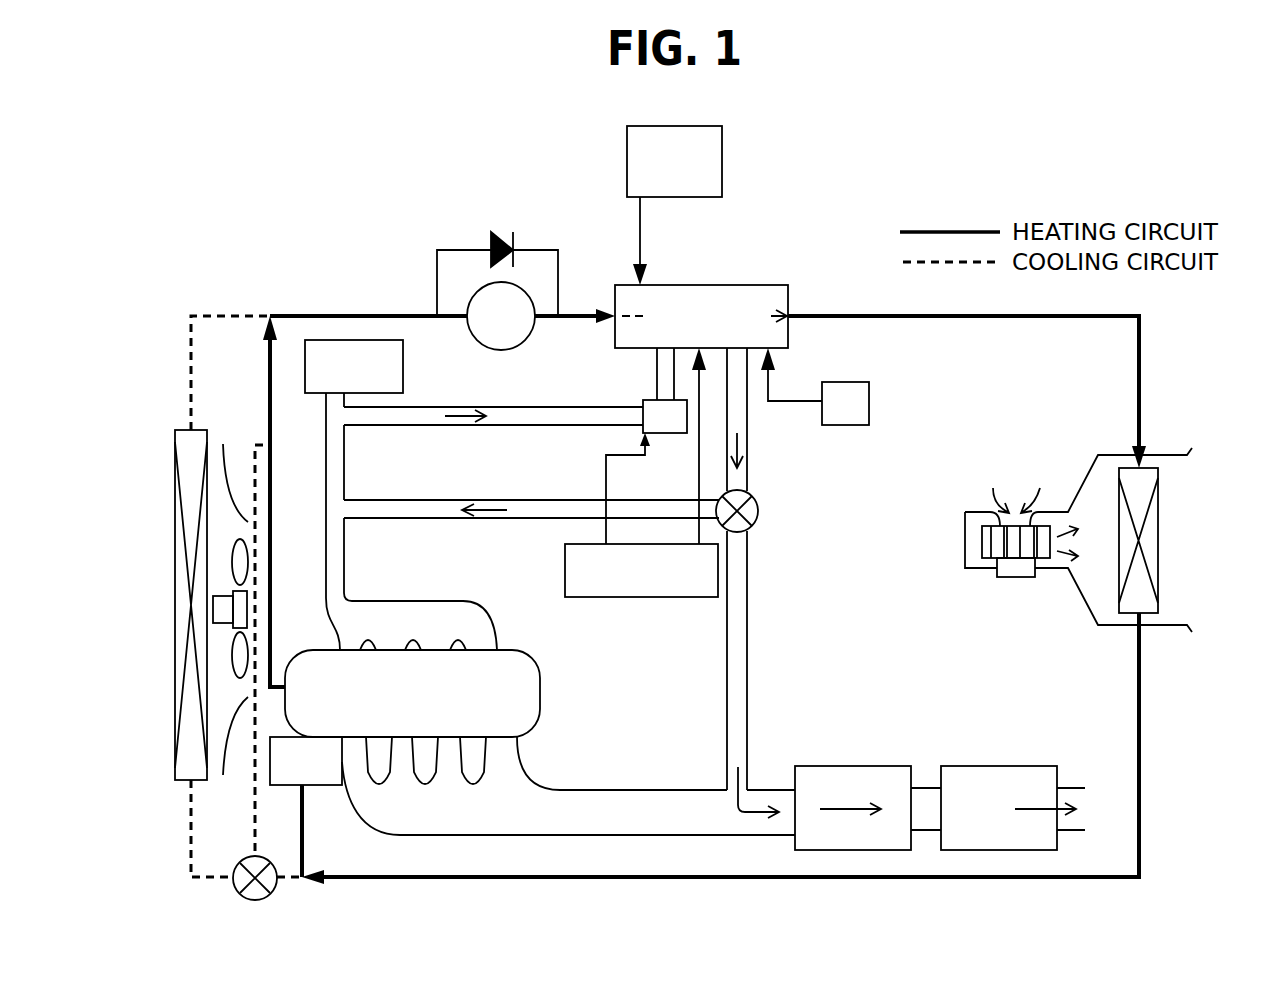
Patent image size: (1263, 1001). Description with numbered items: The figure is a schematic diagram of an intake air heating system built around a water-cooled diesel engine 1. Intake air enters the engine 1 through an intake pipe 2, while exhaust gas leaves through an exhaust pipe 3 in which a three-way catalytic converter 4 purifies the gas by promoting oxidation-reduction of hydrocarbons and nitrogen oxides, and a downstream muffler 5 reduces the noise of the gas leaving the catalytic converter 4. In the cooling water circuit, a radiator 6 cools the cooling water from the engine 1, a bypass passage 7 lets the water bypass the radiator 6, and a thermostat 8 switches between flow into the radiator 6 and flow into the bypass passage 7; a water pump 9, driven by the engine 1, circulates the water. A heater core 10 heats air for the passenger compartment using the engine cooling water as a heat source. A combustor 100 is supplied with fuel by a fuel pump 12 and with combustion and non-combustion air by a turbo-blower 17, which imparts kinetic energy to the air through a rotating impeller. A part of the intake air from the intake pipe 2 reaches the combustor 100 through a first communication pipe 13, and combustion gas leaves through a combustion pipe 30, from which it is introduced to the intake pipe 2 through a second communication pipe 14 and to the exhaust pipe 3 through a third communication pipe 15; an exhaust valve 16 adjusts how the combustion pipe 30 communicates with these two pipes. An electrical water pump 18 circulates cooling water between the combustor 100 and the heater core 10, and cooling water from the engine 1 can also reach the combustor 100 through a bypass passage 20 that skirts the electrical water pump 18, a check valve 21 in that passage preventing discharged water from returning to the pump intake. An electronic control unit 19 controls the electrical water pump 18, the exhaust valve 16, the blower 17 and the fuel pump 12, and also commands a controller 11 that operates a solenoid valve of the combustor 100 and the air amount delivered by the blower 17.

The water-cooled diesel engine 1 is at (541, 680).
The intake pipe 2 is at (478, 610).
The exhaust pipe 3 is at (405, 365).
The three-way catalytic converter 4 is at (848, 766).
The muffler 5 is at (1000, 766).
The radiator 6 is at (175, 663).
The bypass passage 7 is at (255, 842).
The thermostat 8 is at (236, 862).
The water pump 9 is at (326, 787).
The heater core 10 is at (1160, 540).
The controller 11 is at (655, 598).
The fuel pump 12 is at (870, 402).
The first communication pipe 13 is at (548, 405).
The second communication pipe 14 is at (521, 499).
The third communication pipe 15 is at (748, 588).
The exhaust valve 16 is at (759, 510).
The turbo-blower 17 is at (665, 434).
The electrical water pump 18 is at (501, 350).
The electronic control unit 19 is at (677, 199).
The bypass passage 20 is at (448, 248).
The check valve 21 is at (500, 232).
The combustion pipe 30 is at (749, 447).
The combustor 100 is at (730, 285).